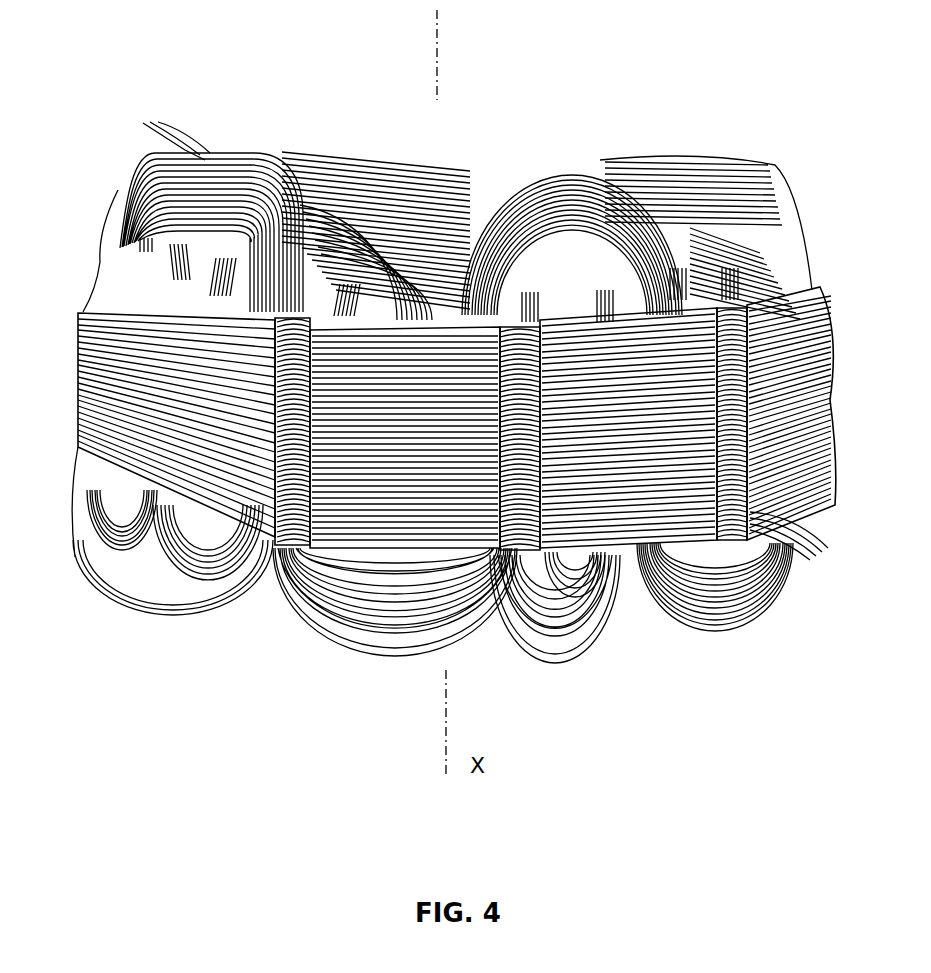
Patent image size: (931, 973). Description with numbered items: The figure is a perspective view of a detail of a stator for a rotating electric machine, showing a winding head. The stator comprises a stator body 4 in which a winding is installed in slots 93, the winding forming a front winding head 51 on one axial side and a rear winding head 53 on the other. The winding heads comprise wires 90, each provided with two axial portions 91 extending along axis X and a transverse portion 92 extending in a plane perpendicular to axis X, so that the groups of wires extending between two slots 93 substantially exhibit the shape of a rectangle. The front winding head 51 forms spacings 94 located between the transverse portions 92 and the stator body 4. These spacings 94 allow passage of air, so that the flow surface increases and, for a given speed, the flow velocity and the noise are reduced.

The stator body 4 is at (625, 505).
The front winding head 51 is at (263, 673).
The rear winding head 53 is at (497, 88).
The wires 90 is at (147, 188).
The axial portions 91 is at (513, 608).
The transverse portion 92 is at (354, 640).
The slots 93 is at (333, 304).
The spacings 94 is at (355, 550).